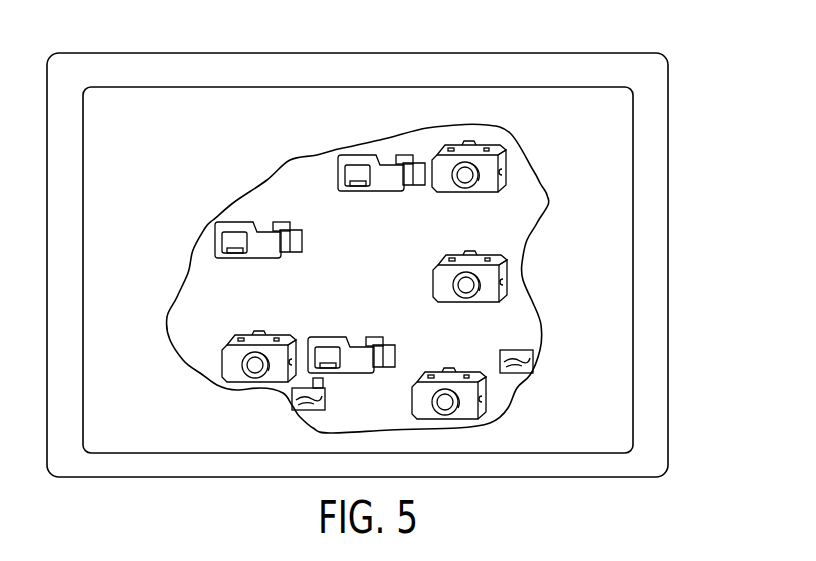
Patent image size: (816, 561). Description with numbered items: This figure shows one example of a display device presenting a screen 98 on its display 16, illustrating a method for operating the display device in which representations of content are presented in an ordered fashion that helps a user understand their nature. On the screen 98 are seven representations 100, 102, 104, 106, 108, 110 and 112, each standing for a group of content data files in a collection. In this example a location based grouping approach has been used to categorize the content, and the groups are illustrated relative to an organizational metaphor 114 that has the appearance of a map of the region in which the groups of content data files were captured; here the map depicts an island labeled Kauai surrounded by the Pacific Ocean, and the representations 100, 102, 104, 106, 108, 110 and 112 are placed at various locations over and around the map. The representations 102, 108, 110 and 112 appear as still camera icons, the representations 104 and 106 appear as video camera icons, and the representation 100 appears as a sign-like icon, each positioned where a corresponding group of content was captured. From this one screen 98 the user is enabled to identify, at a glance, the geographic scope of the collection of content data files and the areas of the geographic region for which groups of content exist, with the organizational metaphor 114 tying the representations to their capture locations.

The display 16 is at (633, 267).
The screen 98 is at (608, 217).
The representation 100 is at (292, 389).
The representation 102 is at (222, 367).
The representation 104 is at (215, 224).
The representation 106 is at (353, 163).
The representation 108 is at (457, 152).
The representation 110 is at (486, 400).
The representation 112 is at (510, 283).
The organizational metaphor 114 is at (545, 180).